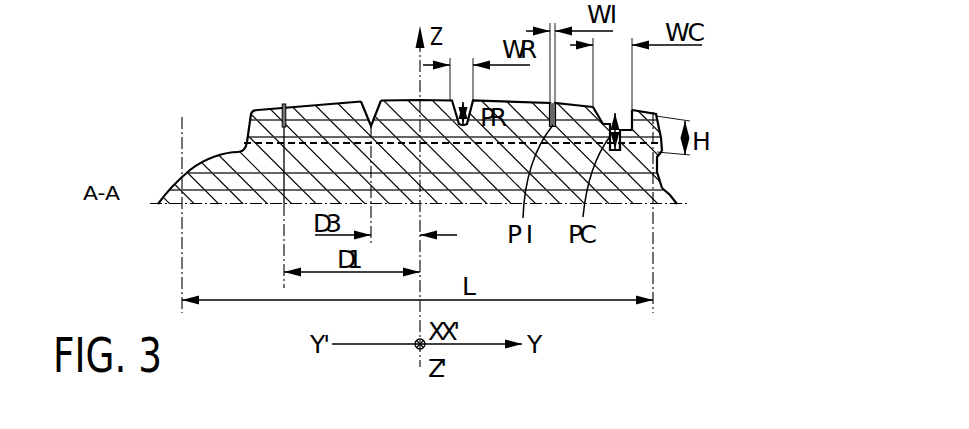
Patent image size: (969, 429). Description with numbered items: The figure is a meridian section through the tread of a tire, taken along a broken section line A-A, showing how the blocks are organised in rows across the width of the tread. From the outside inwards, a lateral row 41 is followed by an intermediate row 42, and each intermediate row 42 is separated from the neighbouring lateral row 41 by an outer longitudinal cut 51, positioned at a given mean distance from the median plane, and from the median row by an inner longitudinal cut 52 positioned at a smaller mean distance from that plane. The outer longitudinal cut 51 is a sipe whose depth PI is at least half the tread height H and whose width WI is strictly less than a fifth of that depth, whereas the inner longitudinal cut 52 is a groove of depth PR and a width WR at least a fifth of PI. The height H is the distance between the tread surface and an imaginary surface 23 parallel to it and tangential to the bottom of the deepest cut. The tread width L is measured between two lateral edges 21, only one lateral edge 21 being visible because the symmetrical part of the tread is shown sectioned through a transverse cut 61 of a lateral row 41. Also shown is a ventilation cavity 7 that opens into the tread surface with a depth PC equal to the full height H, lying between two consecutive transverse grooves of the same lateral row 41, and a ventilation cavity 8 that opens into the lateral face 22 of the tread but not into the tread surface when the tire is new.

The lateral row 41 is at (265, 108).
The intermediate row 42 is at (332, 103).
The outer longitudinal cut 51 is at (284, 105).
The inner longitudinal cut 52 is at (372, 99).
The transverse cut 61 is at (225, 142).
The ventilation cavity 7 is at (623, 114).
The ventilation cavity 8 is at (662, 176).
The lateral edge 21 is at (660, 115).
The lateral face 22 is at (676, 199).
The imaginary surface 23 is at (623, 152).